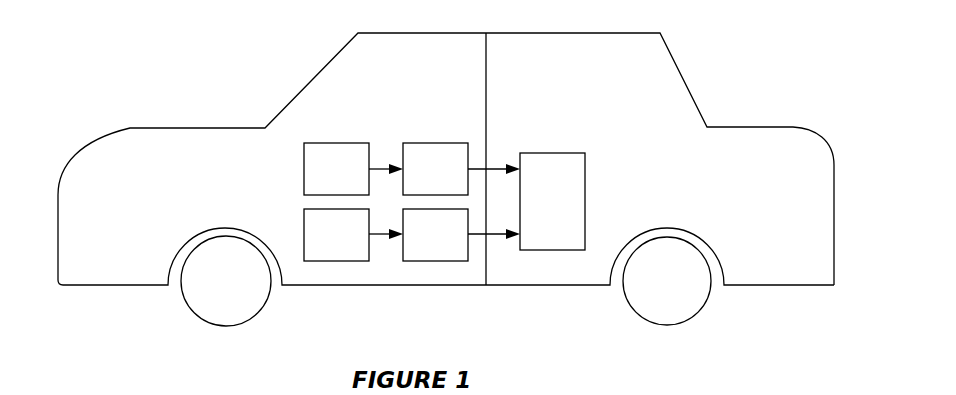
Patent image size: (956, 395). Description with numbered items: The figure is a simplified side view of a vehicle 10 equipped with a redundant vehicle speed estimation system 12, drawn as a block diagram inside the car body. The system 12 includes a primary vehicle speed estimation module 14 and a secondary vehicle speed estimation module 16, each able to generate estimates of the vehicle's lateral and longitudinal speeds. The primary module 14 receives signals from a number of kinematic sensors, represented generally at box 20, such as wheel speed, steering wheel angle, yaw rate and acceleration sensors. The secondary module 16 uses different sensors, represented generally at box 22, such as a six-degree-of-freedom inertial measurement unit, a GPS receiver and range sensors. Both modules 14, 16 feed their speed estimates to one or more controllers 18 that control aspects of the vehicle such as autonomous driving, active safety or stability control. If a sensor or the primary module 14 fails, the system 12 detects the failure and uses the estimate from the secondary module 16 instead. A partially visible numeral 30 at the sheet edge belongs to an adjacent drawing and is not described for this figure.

The vehicle 10 is at (288, 80).
The redundant vehicle speed estimation system 12 is at (428, 278).
The primary vehicle speed estimation module 14 is at (435, 169).
The secondary vehicle speed estimation module 16 is at (435, 235).
The controllers 18 is at (552, 201).
The kinematic sensors 20 is at (336, 169).
The sensors for secondary module 22 is at (336, 235).
The component of adjacent figure (partially shown) 30 is at (700, 394).